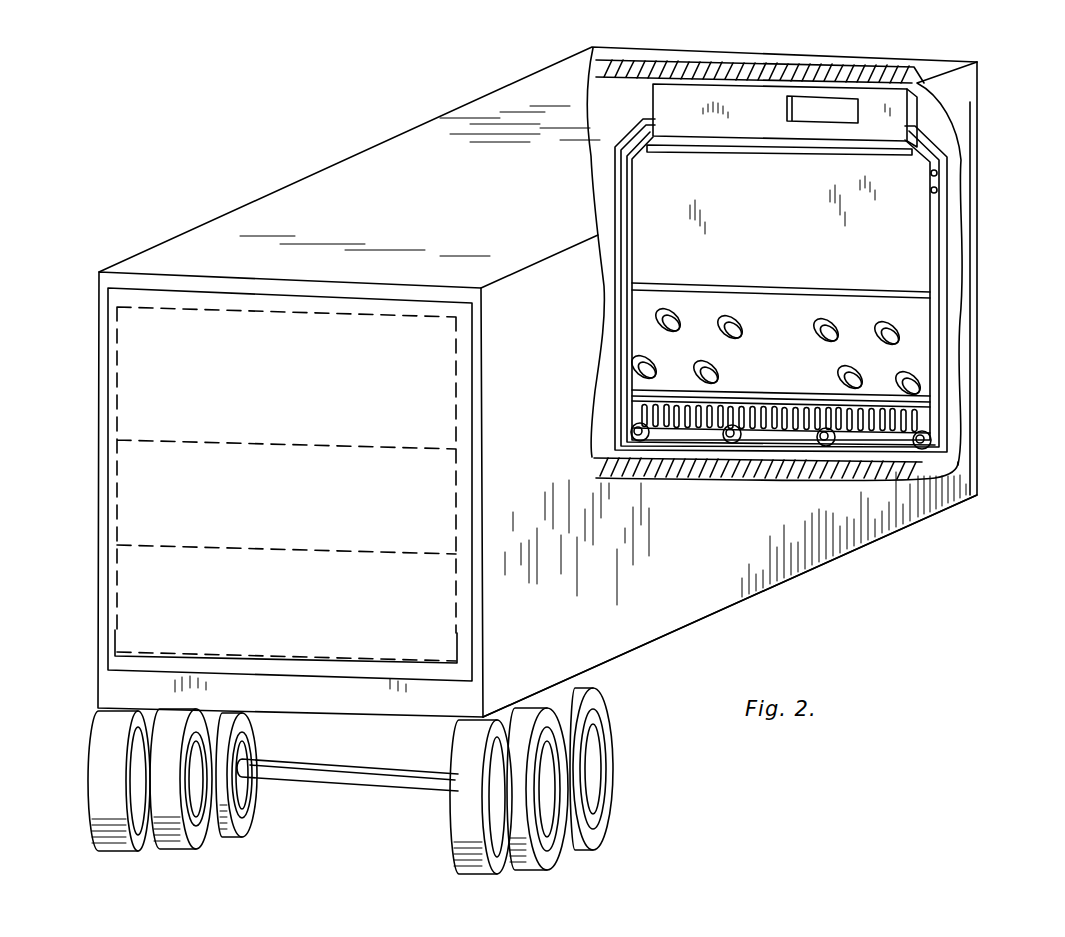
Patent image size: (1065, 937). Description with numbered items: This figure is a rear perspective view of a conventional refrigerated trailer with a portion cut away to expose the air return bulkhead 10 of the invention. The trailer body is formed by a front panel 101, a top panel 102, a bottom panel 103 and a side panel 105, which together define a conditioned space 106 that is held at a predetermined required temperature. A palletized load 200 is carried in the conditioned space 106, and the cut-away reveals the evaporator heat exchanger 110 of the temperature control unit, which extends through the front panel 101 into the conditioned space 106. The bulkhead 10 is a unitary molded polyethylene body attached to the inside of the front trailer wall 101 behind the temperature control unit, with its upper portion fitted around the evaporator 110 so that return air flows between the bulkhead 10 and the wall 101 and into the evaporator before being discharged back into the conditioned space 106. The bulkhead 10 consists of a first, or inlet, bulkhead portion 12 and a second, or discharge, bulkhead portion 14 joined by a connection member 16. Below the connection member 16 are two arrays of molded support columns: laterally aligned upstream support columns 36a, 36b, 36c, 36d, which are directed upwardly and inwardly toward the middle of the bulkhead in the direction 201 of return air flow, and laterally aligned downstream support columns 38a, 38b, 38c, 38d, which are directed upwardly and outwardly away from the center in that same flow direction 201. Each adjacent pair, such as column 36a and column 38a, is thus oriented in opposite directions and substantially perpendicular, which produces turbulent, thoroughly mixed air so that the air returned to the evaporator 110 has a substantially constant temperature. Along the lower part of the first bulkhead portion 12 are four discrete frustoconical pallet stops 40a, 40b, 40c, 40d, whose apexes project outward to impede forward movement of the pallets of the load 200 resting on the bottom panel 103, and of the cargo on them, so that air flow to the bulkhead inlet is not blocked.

The air return bulkhead 10 is at (945, 141).
The first bulkhead portion 12 is at (910, 322).
The second bulkhead portion 14 is at (897, 216).
The connection member 16 is at (759, 290).
The upstream support column 36a is at (636, 364).
The upstream support column 36b is at (717, 368).
The upstream support column 36c is at (838, 378).
The upstream support column 36d is at (920, 375).
The downstream support column 38a is at (672, 308).
The downstream support column 38b is at (740, 336).
The downstream support column 38c is at (826, 316).
The downstream support column 38d is at (887, 318).
The pallet stop 40a is at (630, 434).
The pallet stop 40b is at (732, 444).
The pallet stop 40c is at (826, 447).
The pallet stop 40d is at (932, 441).
The front panel 101 is at (637, 86).
The top panel 102 is at (417, 138).
The bottom panel 103 is at (331, 689).
The side panel 105 is at (730, 580).
The conditioned space 106 is at (112, 345).
The evaporator heat exchanger 110 is at (773, 97).
The palletized load 200 is at (152, 545).
The direction of flow of return air 201 is at (729, 486).